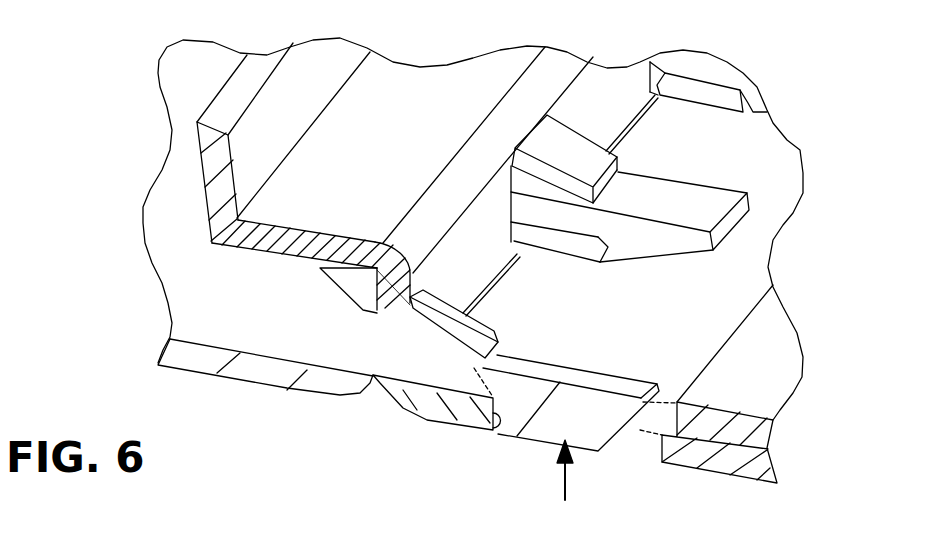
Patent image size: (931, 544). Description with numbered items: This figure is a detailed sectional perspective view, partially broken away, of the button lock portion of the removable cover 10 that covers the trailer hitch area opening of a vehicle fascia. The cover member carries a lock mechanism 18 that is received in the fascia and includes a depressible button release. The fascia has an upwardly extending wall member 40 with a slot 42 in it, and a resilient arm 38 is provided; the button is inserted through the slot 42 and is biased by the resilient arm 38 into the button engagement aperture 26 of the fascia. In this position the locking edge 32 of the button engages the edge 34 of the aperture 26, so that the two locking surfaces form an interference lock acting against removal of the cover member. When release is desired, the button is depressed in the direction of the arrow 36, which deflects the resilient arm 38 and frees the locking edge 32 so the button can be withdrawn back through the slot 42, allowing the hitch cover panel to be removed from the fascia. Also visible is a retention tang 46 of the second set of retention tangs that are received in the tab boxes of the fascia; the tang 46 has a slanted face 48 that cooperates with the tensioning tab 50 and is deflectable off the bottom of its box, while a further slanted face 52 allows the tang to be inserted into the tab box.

The removable cover 10 is at (250, 433).
The lock mechanism 18 is at (535, 440).
The button engagement aperture 26 is at (665, 444).
The locking edge 32 is at (483, 403).
The edge 34 is at (502, 435).
The arrow 36 is at (567, 491).
The resilient arm 38 is at (448, 313).
The upwardly extending wall member 40 is at (387, 290).
The slot 42 is at (352, 333).
The retention tang 46 is at (703, 207).
The slanted face 48 is at (597, 260).
The tensioning tab 50 is at (572, 143).
The slanted face 52 is at (687, 255).